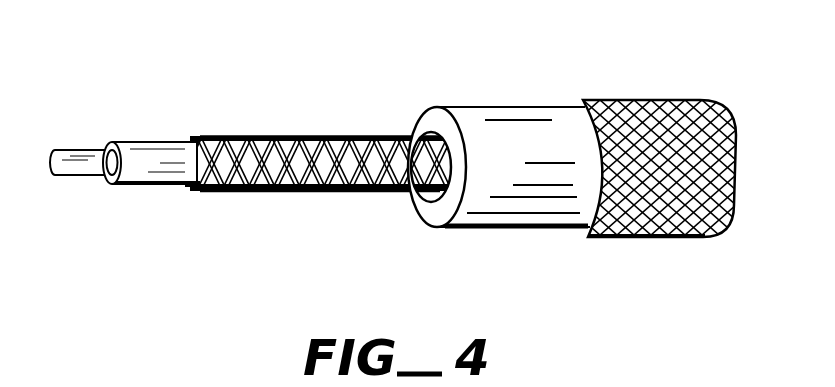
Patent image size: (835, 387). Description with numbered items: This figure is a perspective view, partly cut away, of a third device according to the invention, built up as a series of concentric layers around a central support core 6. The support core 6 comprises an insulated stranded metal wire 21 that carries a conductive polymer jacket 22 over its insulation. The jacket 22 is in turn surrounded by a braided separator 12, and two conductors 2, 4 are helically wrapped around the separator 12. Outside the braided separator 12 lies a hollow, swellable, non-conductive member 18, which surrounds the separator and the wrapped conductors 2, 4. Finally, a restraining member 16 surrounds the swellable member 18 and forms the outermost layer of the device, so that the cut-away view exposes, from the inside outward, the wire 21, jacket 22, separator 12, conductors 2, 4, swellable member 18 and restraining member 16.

The conductor 2 is at (340, 193).
The conductor 4 is at (260, 137).
The support core 6 is at (183, 190).
The braided separator 12 is at (386, 138).
The restraining member 16 is at (643, 160).
The swellable non-conductive member 18 is at (547, 137).
The insulated stranded metal wire 21 is at (93, 153).
The conductive polymer jacket 22 is at (125, 185).